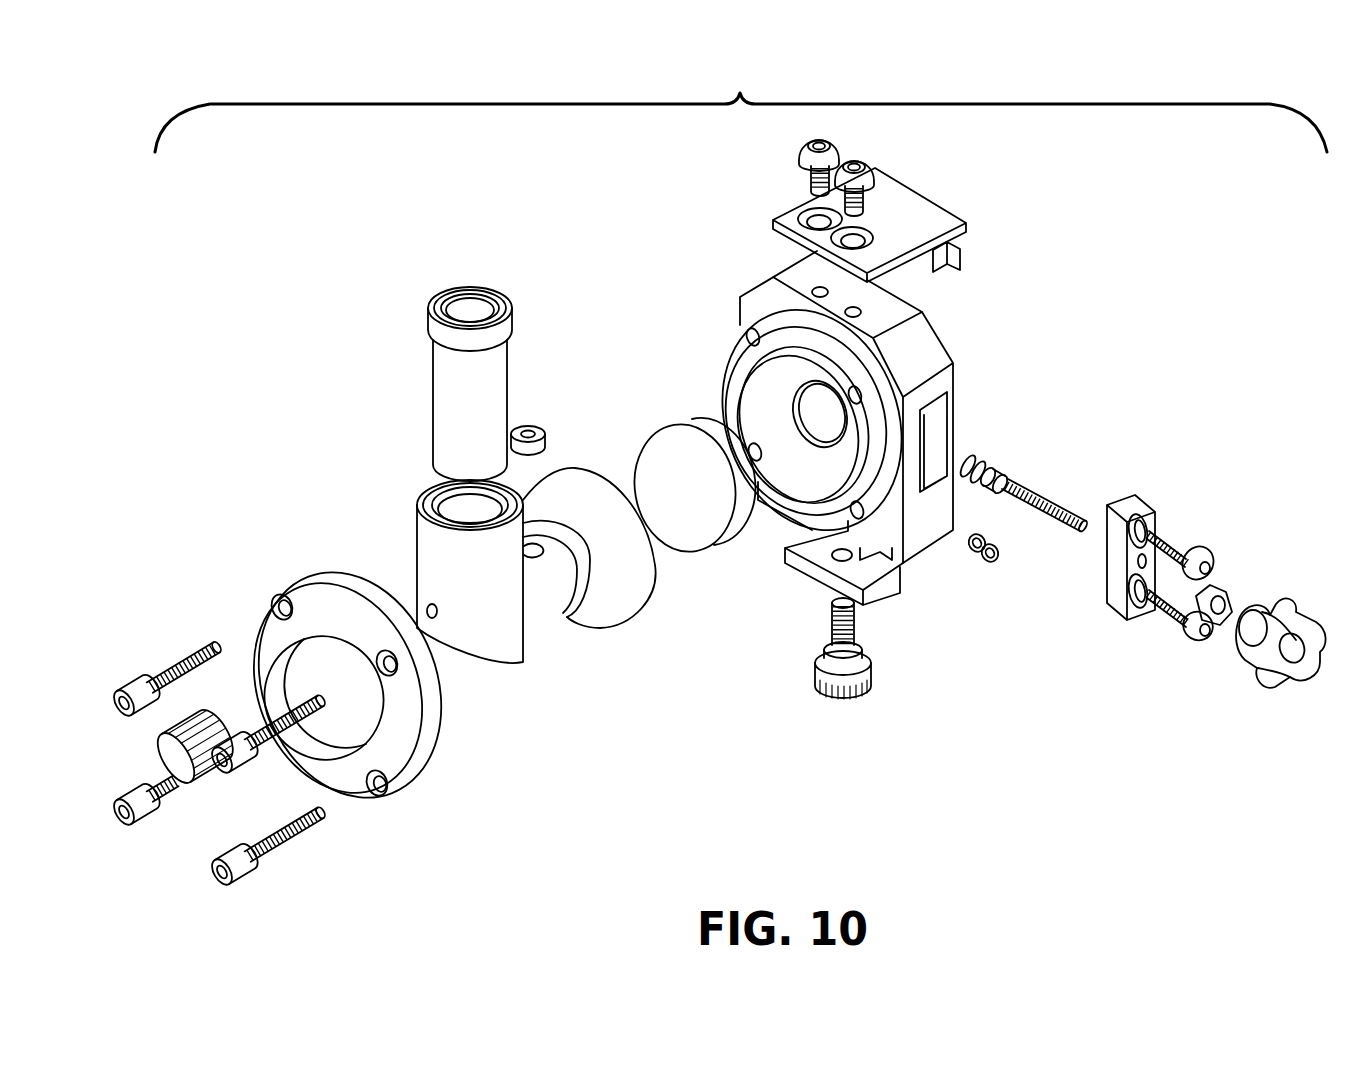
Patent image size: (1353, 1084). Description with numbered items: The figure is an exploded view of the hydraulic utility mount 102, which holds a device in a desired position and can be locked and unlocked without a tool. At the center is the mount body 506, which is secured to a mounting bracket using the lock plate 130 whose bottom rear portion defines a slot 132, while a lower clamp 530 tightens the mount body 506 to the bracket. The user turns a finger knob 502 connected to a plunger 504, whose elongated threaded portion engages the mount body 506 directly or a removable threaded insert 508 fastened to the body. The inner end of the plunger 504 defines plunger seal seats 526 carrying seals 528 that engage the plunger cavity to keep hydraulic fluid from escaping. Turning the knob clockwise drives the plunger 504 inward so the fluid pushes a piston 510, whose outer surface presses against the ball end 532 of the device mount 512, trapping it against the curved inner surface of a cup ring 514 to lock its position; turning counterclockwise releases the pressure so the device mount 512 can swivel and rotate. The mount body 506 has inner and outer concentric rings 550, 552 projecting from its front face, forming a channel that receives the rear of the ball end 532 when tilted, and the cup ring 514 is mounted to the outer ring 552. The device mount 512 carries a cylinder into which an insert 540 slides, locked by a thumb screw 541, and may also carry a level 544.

The utility mount 102 is at (741, 102).
The lock plate 130 is at (920, 205).
The slot 132 is at (950, 264).
The mount body 506 is at (937, 340).
The inner ring 550 is at (805, 372).
The outer ring 552 is at (735, 368).
The piston 510 is at (667, 423).
The level 544 is at (528, 426).
The insert 540 is at (455, 455).
The plunger seal seats 526 is at (990, 463).
The plunger 504 is at (1033, 483).
The seals 528 is at (987, 570).
The lower clamp 530 is at (873, 633).
The threaded insert 508 is at (1117, 590).
The finger knob 502 is at (1267, 650).
The ball end 532 is at (617, 585).
The device mount 512 is at (543, 606).
The cup ring 514 is at (437, 717).
The thumb screw 541 is at (183, 760).